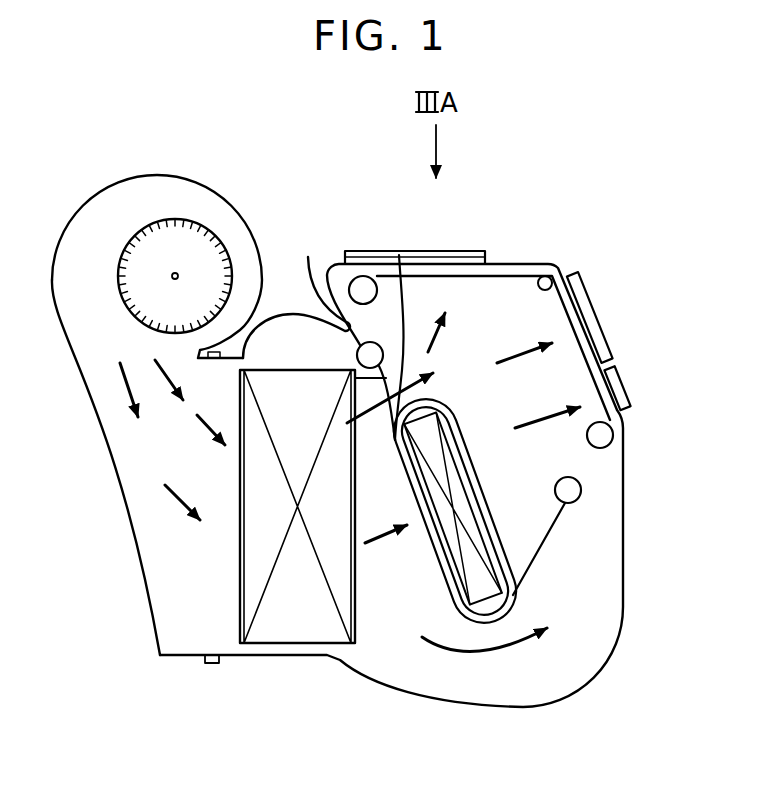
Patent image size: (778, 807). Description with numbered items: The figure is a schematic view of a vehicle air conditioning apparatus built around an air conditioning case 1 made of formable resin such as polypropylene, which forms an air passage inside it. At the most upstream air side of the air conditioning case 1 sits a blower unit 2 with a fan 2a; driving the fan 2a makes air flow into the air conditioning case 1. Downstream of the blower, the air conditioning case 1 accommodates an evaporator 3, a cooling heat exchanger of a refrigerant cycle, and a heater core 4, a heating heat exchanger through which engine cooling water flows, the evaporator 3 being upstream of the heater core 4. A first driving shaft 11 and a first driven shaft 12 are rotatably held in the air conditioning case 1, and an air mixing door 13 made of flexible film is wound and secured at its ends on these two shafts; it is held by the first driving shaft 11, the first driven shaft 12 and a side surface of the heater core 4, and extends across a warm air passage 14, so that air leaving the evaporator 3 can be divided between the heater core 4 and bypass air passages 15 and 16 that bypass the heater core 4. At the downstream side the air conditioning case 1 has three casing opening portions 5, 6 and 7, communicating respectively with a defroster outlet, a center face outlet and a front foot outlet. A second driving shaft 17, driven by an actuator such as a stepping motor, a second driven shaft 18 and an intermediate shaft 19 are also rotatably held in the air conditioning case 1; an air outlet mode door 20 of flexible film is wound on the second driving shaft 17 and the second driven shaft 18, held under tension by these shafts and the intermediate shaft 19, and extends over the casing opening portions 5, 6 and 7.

The air conditioning case 1 is at (521, 712).
The blower unit 2 is at (120, 499).
The fan 2a is at (137, 231).
The evaporator 3 is at (270, 628).
The heater core 4 is at (488, 592).
The casing opening portion 5 is at (440, 251).
The casing opening portion 6 is at (590, 322).
The casing opening portion 7 is at (617, 387).
The first driving shaft 11 is at (574, 490).
The first driven shaft 12 is at (308, 257).
The air mixing door 13 is at (357, 377).
The warm air passage 14 is at (380, 553).
The bypass air passage 15 is at (399, 255).
The bypass air passage 16 is at (440, 660).
The second driving shaft 17 is at (605, 435).
The second driven shaft 18 is at (361, 276).
The intermediate shaft 19 is at (543, 276).
The air outlet mode door 20 is at (469, 274).